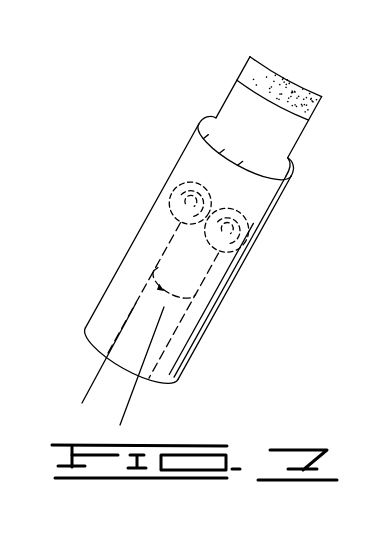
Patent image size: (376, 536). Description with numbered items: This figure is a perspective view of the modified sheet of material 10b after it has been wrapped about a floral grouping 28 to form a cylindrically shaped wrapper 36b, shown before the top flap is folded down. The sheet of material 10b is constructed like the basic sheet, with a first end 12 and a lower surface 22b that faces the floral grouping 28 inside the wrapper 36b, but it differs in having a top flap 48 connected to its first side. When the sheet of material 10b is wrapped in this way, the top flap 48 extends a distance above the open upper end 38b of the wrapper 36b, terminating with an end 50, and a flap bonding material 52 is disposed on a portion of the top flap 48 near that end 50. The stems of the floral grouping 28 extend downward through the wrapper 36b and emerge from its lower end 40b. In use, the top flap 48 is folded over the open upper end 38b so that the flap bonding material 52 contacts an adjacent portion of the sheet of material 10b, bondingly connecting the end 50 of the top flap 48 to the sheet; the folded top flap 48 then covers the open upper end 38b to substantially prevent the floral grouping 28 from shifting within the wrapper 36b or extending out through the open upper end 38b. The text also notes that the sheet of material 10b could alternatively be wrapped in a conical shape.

The sheet of material 10b is at (138, 247).
The first end 12 is at (368, 201).
The lower surface 22b is at (153, 214).
The floral grouping 28 is at (232, 323).
The wrapper 36b is at (108, 277).
The open upper end 38b is at (293, 172).
The sleeve bottom opening 40b is at (158, 384).
The top flap 48 is at (238, 107).
The end 50 is at (291, 64).
The flap bonding material 52 is at (267, 72).